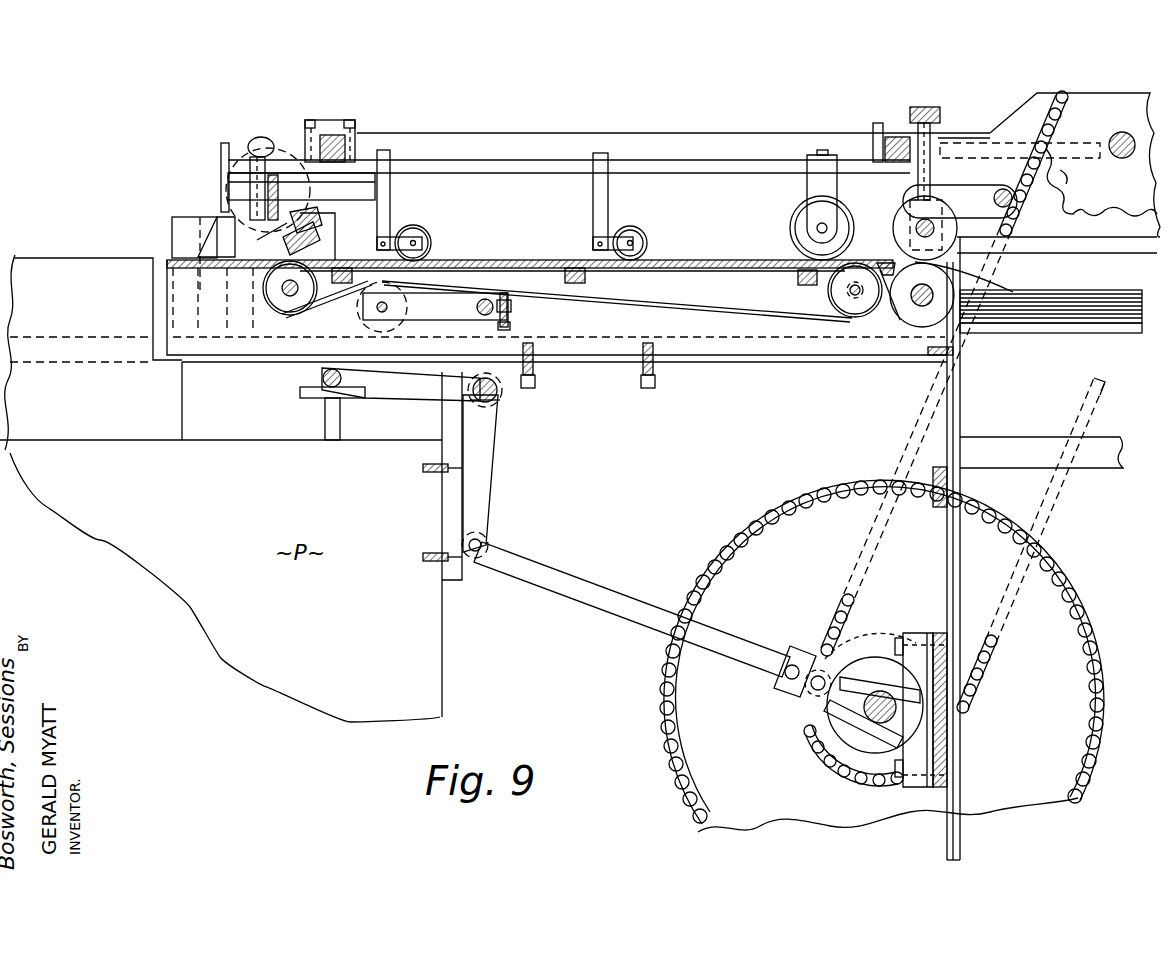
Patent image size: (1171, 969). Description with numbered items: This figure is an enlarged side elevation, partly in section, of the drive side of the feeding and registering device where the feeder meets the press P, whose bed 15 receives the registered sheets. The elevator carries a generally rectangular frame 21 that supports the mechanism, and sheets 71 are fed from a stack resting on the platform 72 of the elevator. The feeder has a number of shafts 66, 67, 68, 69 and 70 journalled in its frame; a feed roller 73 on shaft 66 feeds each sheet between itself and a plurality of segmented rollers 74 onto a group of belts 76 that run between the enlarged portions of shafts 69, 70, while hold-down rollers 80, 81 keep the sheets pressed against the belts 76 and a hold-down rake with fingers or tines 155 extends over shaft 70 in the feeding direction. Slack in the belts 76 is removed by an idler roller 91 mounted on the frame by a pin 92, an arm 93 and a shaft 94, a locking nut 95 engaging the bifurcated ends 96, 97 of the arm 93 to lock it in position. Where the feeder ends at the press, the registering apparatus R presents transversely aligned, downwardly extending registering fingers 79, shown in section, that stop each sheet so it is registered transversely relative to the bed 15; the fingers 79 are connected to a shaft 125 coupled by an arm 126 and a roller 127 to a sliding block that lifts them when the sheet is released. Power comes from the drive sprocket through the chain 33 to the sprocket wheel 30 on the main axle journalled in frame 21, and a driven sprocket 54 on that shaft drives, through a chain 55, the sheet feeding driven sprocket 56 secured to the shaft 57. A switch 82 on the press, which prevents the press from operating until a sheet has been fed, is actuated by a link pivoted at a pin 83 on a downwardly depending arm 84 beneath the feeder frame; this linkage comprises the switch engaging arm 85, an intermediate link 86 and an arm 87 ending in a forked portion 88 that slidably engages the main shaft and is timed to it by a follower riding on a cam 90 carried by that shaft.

The bed 15 is at (95, 272).
The frame 21 is at (945, 565).
The sprocket wheel 30 is at (662, 694).
The chain 33 is at (668, 745).
The driven sprocket 54 is at (872, 782).
The chain 55 is at (978, 678).
The sheet feeding driven sprocket 56 is at (1068, 212).
The shaft 57 is at (1120, 158).
The shaft 66 is at (920, 305).
The shaft 67 is at (930, 222).
The shaft 68 is at (817, 226).
The shaft 69 is at (855, 300).
The shaft 70 is at (290, 300).
The sheets 71 is at (1010, 288).
The platform 72 is at (1022, 335).
The feed roller 73 is at (898, 312).
The segmented rollers 74 is at (892, 235).
The belts 76 is at (530, 262).
The registering fingers 79 is at (262, 240).
The hold-down roller 80 is at (641, 233).
The hold-down roller 81 is at (424, 233).
The switch 82 is at (305, 410).
The pin 83 is at (500, 402).
The arm 84 is at (500, 394).
The switch engaging arm 85 is at (405, 382).
The intermediate link 86 is at (492, 480).
The arm 87 is at (590, 580).
The forked portion 88 is at (815, 697).
The cam 90 is at (852, 752).
The idler roller 91 is at (360, 318).
The pin 92 is at (503, 300).
The arm 93 is at (450, 322).
The shaft 94 is at (386, 312).
The locking nut 95 is at (510, 332).
The bifurcated end 96 is at (512, 310).
The bifurcated end 97 is at (580, 282).
The shaft 125 is at (318, 226).
The arm 126 is at (300, 150).
The roller 127 is at (268, 140).
The fingers or tines 155 is at (220, 250).
The registering apparatus R is at (258, 225).